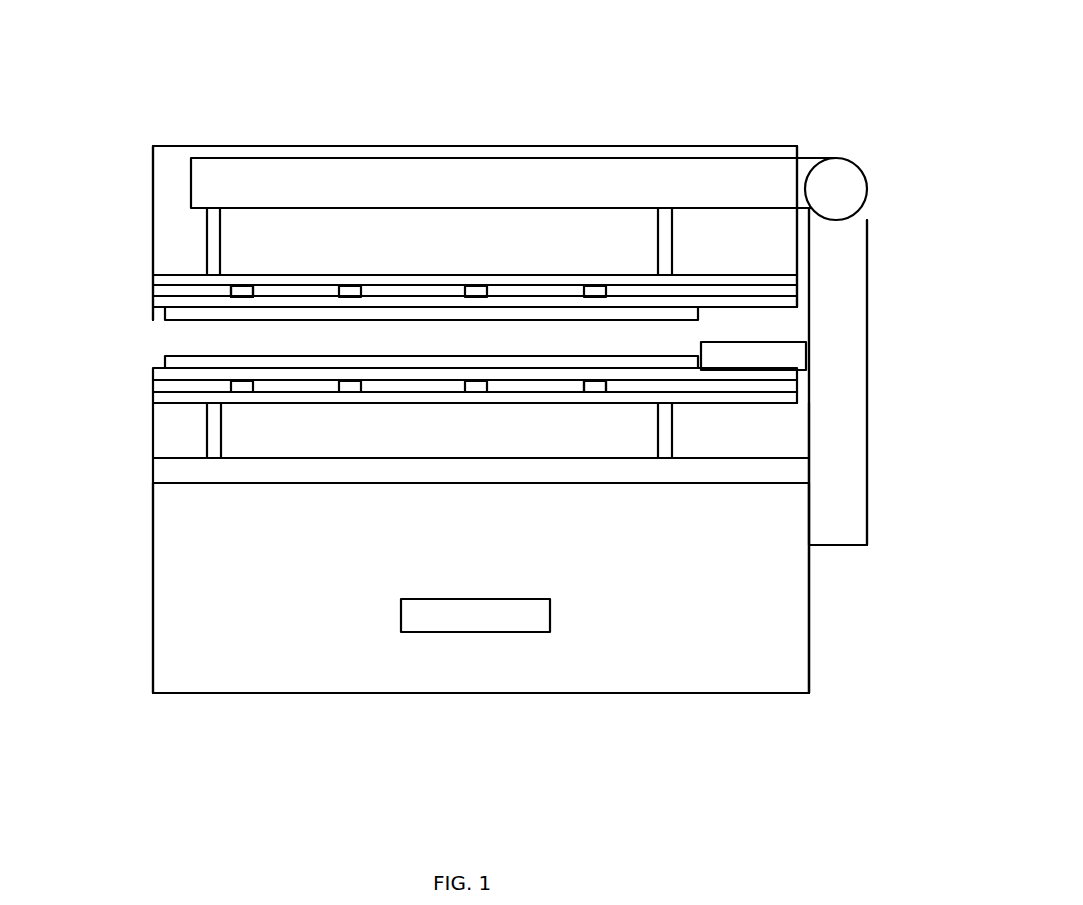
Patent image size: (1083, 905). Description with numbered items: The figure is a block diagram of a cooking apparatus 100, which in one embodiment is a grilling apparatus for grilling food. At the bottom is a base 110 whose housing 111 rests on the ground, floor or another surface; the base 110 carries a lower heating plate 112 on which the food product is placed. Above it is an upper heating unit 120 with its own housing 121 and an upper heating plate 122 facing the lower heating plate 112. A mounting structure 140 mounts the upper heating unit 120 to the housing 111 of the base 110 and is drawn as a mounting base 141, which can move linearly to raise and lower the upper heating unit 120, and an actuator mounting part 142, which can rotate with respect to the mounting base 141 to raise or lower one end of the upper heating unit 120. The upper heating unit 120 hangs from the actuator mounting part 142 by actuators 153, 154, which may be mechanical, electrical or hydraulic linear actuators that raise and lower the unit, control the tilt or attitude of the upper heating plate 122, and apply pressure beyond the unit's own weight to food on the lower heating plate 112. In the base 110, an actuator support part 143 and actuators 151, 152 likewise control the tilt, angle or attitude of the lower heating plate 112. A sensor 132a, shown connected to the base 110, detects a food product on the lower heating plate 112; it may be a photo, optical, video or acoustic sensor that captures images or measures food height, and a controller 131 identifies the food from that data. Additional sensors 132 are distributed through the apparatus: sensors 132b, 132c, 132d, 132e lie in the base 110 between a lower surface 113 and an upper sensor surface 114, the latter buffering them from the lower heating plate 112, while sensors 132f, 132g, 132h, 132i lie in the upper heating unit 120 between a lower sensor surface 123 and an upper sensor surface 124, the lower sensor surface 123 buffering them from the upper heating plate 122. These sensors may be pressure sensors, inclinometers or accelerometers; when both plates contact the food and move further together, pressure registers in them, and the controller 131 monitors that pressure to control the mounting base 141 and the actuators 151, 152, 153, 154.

The cooking apparatus 100 is at (672, 74).
The base 110 is at (120, 552).
The housing 111 is at (152, 645).
The lower heating plate 112 is at (164, 358).
The lower surface 113 is at (152, 397).
The upper sensor surface 114 is at (152, 379).
The upper heating unit 120 is at (132, 240).
The housing 121 is at (152, 185).
The upper heating plate 122 is at (164, 320).
The lower sensor surface 123 is at (152, 304).
The upper sensor surface 124 is at (152, 283).
The controller 131 is at (400, 598).
The sensors 132 is at (418, 339).
The sensor 132a is at (778, 370).
The sensor 132b is at (244, 392).
The sensor 132c is at (352, 392).
The sensor 132d is at (478, 392).
The sensor 132e is at (597, 392).
The sensor 132f is at (597, 297).
The sensor 132g is at (478, 297).
The sensor 132h is at (352, 297).
The sensor 132i is at (244, 297).
The mounting structure 140 is at (840, 140).
The mounting base 141 is at (853, 285).
The actuator mounting part 142 is at (303, 157).
The actuator support part 143 is at (291, 484).
The actuator 151 is at (206, 444).
The actuator 152 is at (672, 445).
The actuator 153 is at (668, 262).
The actuator 154 is at (208, 256).